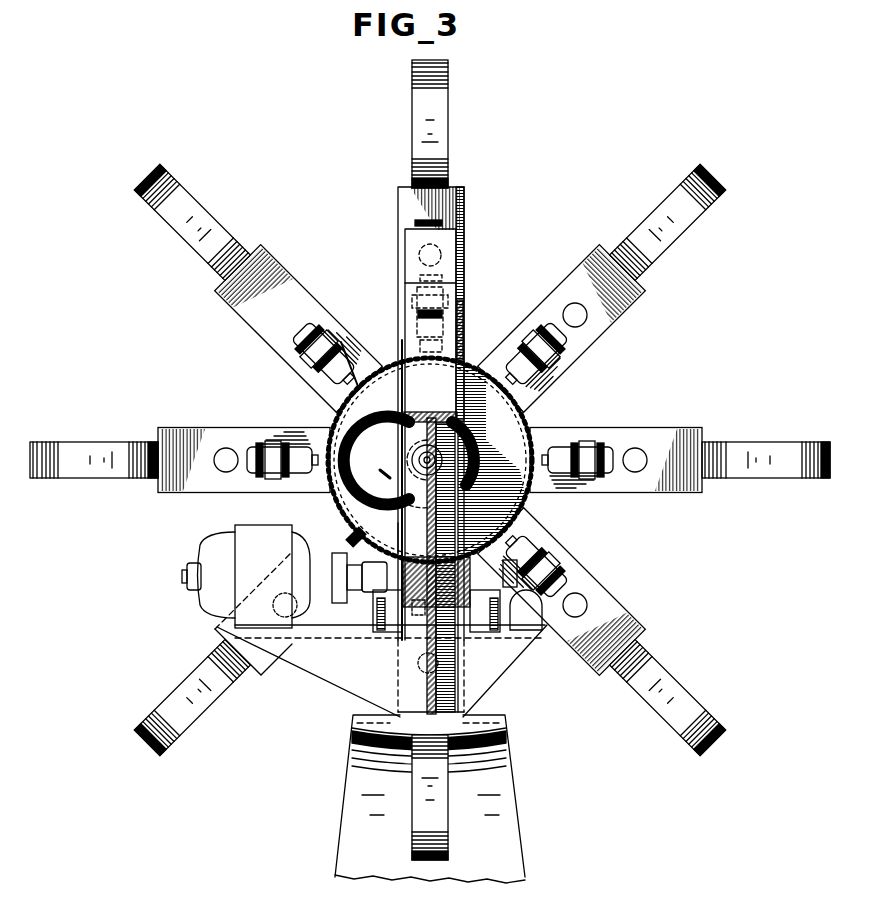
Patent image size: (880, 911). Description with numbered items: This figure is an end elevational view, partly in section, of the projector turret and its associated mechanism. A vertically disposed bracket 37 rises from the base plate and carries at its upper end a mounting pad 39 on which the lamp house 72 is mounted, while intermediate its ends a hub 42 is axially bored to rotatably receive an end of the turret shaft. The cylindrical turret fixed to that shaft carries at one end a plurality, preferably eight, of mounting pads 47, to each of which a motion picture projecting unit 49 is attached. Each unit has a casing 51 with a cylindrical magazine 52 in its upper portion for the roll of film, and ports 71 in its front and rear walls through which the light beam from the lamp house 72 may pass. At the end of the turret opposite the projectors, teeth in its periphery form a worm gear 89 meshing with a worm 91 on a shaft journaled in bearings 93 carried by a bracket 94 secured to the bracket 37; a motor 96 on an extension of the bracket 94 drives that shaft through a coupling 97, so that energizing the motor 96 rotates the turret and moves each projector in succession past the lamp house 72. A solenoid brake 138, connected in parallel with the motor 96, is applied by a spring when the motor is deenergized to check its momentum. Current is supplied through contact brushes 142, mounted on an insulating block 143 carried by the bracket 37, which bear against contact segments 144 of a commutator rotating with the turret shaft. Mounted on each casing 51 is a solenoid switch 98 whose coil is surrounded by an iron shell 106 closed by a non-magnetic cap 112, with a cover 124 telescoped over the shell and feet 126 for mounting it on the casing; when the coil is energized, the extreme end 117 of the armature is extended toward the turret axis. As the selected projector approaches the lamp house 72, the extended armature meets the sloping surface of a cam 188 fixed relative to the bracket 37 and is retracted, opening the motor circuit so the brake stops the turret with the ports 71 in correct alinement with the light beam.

The bracket 37 is at (430, 692).
The mounting pad 39 is at (450, 282).
The hub 42 is at (477, 444).
The mounting pad 47 is at (542, 526).
The motion picture projecting unit 49 is at (316, 287).
The casing 51 is at (297, 367).
The cylindrical magazine 52 is at (448, 134).
The port 71 is at (228, 474).
The lamp house 72 is at (413, 238).
The worm gear 89 is at (386, 430).
The worm 91 is at (400, 555).
The bearing 93 is at (368, 616).
The bracket 94 is at (497, 663).
The motor 96 is at (222, 550).
The coupling 97 is at (359, 533).
The solenoid switch 98 is at (564, 440).
The iron shell 106 is at (560, 364).
The cap 112 is at (327, 392).
The extreme end of the armature 117 is at (527, 546).
The cover 124 is at (313, 328).
The feet 126 is at (340, 335).
The solenoid brake 138 is at (531, 618).
The contact brush 142 is at (400, 412).
The insulating block 143 is at (404, 387).
The contact segment 144 is at (383, 472).
The cam 188 is at (458, 332).